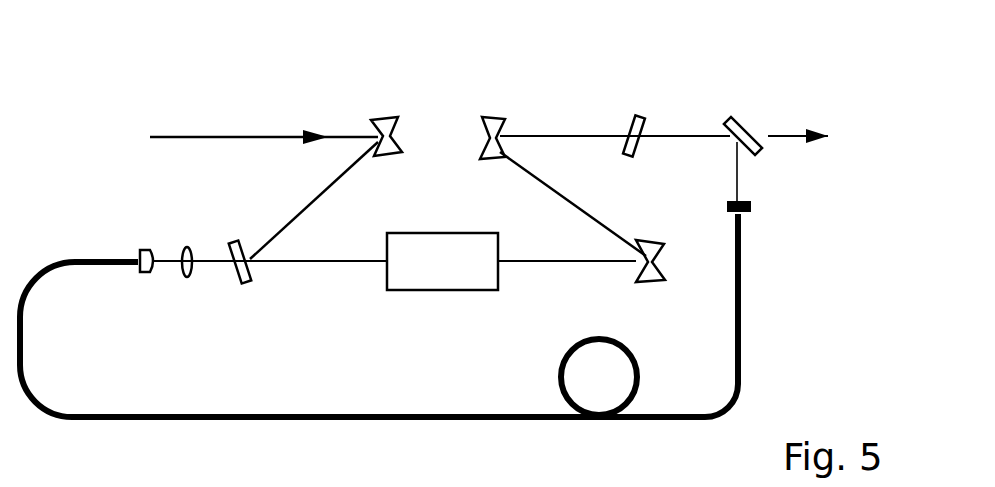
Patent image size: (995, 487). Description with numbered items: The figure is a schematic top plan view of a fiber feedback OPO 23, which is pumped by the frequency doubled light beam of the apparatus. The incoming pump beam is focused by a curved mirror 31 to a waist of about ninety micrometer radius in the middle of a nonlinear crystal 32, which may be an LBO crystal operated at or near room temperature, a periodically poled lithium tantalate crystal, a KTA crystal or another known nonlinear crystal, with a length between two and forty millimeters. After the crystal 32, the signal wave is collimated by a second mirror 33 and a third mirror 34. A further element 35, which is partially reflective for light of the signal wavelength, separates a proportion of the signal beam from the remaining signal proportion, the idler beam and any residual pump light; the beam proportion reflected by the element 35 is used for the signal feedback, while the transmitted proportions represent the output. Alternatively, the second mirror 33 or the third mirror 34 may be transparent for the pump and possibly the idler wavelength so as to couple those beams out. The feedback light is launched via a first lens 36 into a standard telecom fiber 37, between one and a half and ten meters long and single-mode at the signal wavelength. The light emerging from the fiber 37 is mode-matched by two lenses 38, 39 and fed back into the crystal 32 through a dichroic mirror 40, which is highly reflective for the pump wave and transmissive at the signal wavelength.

The OPO 23 is at (168, 92).
The curved mirror 31 is at (397, 116).
The nonlinear crystal 32 is at (462, 246).
The second mirror 33 is at (655, 282).
The third mirror 34 is at (484, 146).
The partially reflective element 35 is at (766, 100).
The first lens 36 is at (750, 206).
The standard telecom fiber 37 is at (742, 341).
The lens 38 is at (148, 250).
The lens 39 is at (640, 92).
The dichroic mirror 40 is at (285, 241).